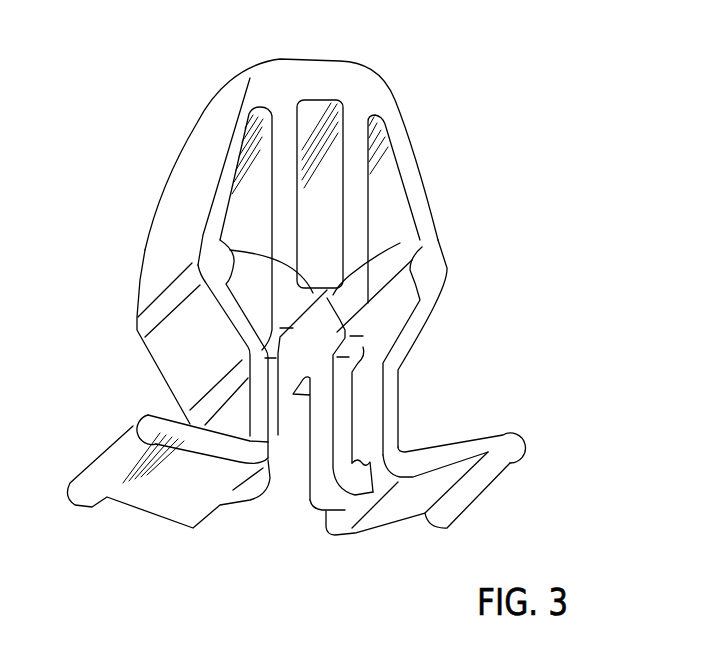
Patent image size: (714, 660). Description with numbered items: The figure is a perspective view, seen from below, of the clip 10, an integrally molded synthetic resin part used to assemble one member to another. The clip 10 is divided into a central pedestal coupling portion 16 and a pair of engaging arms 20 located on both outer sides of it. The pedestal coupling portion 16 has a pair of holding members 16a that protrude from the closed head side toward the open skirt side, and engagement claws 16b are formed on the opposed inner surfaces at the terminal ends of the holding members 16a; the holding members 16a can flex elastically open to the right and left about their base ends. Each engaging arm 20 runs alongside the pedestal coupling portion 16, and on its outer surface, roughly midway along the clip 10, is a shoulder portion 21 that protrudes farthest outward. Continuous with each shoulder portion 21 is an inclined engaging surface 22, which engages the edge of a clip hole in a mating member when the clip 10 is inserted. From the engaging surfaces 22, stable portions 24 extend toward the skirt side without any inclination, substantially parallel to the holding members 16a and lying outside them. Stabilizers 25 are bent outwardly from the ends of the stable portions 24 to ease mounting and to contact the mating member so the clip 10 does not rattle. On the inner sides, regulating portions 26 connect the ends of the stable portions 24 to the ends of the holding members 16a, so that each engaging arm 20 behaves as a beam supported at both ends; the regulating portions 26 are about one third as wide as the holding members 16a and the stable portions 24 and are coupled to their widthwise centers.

The clip 10 is at (148, 144).
The pedestal coupling portion 16 is at (293, 225).
The holding members 16a is at (252, 210).
The engagement claws 16b is at (230, 250).
The engaging arms 20 is at (214, 133).
The shoulder portions 21 is at (160, 291).
The engaging surfaces 22 is at (177, 332).
The stable portions 24 is at (218, 415).
The stabilizers 25 is at (150, 502).
The regulating portions 26 is at (278, 437).